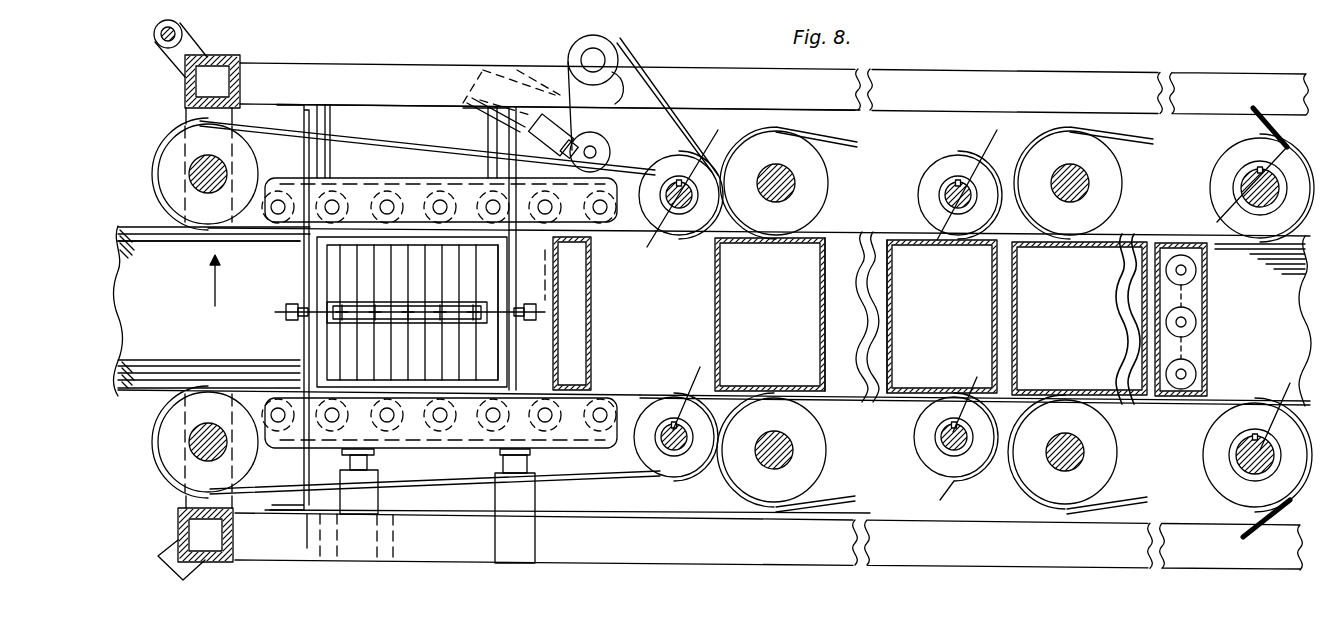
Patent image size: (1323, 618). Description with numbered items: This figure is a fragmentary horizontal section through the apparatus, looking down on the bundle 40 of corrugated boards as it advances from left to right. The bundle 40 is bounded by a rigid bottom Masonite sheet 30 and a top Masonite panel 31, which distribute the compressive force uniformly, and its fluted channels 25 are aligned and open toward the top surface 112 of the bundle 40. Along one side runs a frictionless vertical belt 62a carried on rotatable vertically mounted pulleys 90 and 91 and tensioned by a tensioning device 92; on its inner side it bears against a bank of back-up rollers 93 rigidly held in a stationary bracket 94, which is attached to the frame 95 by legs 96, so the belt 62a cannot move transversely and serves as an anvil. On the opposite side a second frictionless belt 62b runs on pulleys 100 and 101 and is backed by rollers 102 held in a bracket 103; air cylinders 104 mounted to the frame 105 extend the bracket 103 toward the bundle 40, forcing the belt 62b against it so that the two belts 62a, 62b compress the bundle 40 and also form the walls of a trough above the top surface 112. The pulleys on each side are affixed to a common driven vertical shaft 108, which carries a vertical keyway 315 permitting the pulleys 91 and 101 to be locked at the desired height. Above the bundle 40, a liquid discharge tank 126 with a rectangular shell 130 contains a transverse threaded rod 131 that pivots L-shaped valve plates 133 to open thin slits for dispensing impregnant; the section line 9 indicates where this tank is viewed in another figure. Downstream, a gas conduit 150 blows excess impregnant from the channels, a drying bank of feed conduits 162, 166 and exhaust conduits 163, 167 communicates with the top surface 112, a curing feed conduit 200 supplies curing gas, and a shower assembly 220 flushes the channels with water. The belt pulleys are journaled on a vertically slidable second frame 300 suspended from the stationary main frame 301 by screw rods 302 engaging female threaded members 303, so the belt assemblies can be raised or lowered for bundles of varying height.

The section line arrow 9 is at (368, 275).
The fluted channels 25 is at (98, 298).
The Masonite sheet 30 is at (118, 394).
The top panel of Masonite 31 is at (122, 227).
The bundle 40 is at (179, 223).
The frictionless vertical belt 62a is at (467, 144).
The second frictionless belt 62b is at (558, 480).
The pulley 90 is at (180, 158).
The pulley 91 is at (673, 160).
The tensioning device 92 is at (567, 67).
The back-up rollers 93 is at (303, 230).
The stationary bracket 94 is at (288, 182).
The frame 95 is at (854, 90).
The legs 96 is at (334, 118).
The pulley 100 is at (177, 465).
The pulley 101 is at (680, 468).
The back-up rollers 102 is at (433, 438).
The bracket 103 is at (290, 438).
The air cylinders 104 is at (493, 492).
The frame 105 is at (871, 565).
The vertical shaft 108 is at (195, 164).
The top surface of bundle 112 is at (1288, 350).
The liquid discharge tank 126 is at (314, 355).
The rectangular shell 130 is at (505, 360).
The threaded rod 131 is at (283, 306).
The valve plate 133 is at (360, 275).
The gas conduit 150 is at (575, 332).
The feed conduit 162 is at (790, 265).
The exhaust conduit 163 is at (822, 282).
The feed conduit 166 is at (884, 288).
The exhaust conduit 167 is at (973, 270).
The feed conduit 200 is at (1075, 290).
The shower assembly 220 is at (1225, 313).
The vertically slidable second frame 300 is at (398, 48).
The stationary main frame 301 is at (217, 56).
The screw rods 302 is at (152, 34).
The female threaded members 303 is at (163, 60).
The vertical keyway 315 is at (1286, 108).